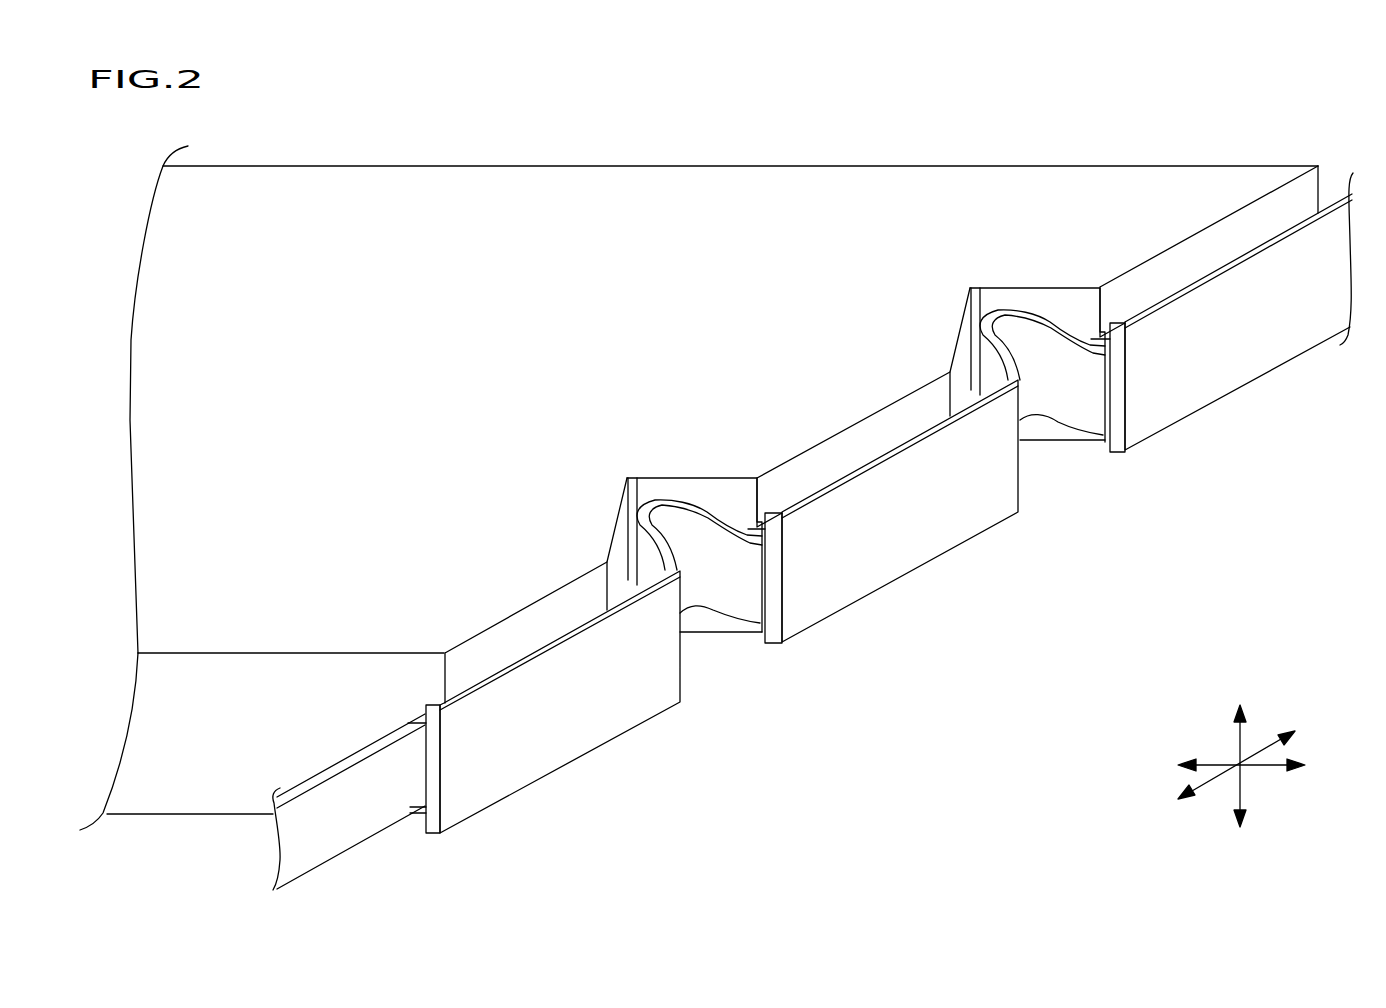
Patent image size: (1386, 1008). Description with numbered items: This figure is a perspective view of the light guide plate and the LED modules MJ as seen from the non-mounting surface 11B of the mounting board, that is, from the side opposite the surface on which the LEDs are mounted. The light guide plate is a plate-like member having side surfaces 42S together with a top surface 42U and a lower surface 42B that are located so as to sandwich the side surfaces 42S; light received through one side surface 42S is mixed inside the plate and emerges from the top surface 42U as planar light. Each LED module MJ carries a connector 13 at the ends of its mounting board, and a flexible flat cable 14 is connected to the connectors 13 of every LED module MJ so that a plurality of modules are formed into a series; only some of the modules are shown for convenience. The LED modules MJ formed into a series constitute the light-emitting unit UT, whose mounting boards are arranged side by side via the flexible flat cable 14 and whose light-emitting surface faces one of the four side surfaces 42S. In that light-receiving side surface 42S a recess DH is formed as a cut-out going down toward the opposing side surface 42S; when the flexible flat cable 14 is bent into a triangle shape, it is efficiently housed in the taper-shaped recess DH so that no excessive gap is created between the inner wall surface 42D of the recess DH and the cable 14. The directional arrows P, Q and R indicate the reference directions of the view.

The top surface 42U is at (724, 399).
The side surface 42S is at (1273, 163).
The lower surface 42B is at (197, 817).
The inner wall surface 42D is at (645, 497).
The non-mounting surface 11B is at (896, 503).
The connector 13 is at (412, 720).
The flexible flat cable 14 is at (689, 600).
The recess DH is at (718, 413).
The LED module MJ is at (437, 850).
The light-emitting unit UT is at (520, 893).
The P direction axis P is at (1241, 770).
The Q direction axis Q is at (1240, 767).
The R direction axis R is at (1241, 766).